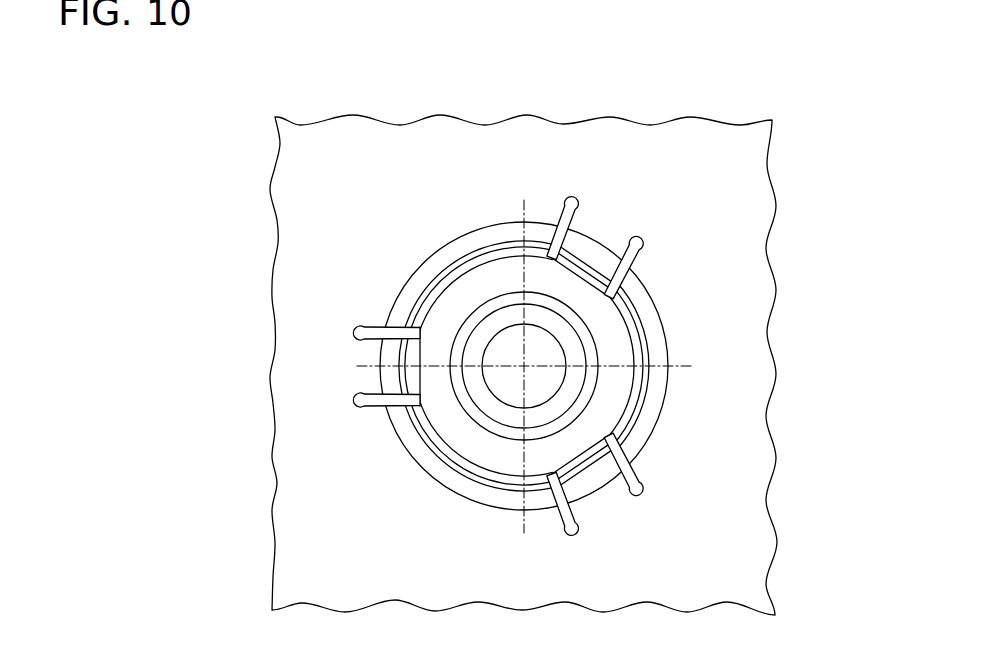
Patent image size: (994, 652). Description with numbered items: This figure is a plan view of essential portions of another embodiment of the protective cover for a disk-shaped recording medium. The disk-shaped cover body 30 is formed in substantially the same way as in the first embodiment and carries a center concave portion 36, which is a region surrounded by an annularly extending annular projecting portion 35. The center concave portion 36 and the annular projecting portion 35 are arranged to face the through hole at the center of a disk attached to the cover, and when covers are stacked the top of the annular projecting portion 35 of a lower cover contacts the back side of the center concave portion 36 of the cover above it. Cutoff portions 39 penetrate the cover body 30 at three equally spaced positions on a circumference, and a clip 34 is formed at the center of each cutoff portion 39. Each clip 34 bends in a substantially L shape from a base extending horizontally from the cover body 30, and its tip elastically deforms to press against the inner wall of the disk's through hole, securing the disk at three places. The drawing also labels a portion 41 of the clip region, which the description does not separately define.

The cover body 30 is at (718, 415).
The clip 34 is at (385, 377).
The annular projecting portion 35 is at (572, 345).
The center concave portion 36 is at (513, 353).
The cutoff portion 39 is at (360, 332).
The tab 41 is at (387, 346).